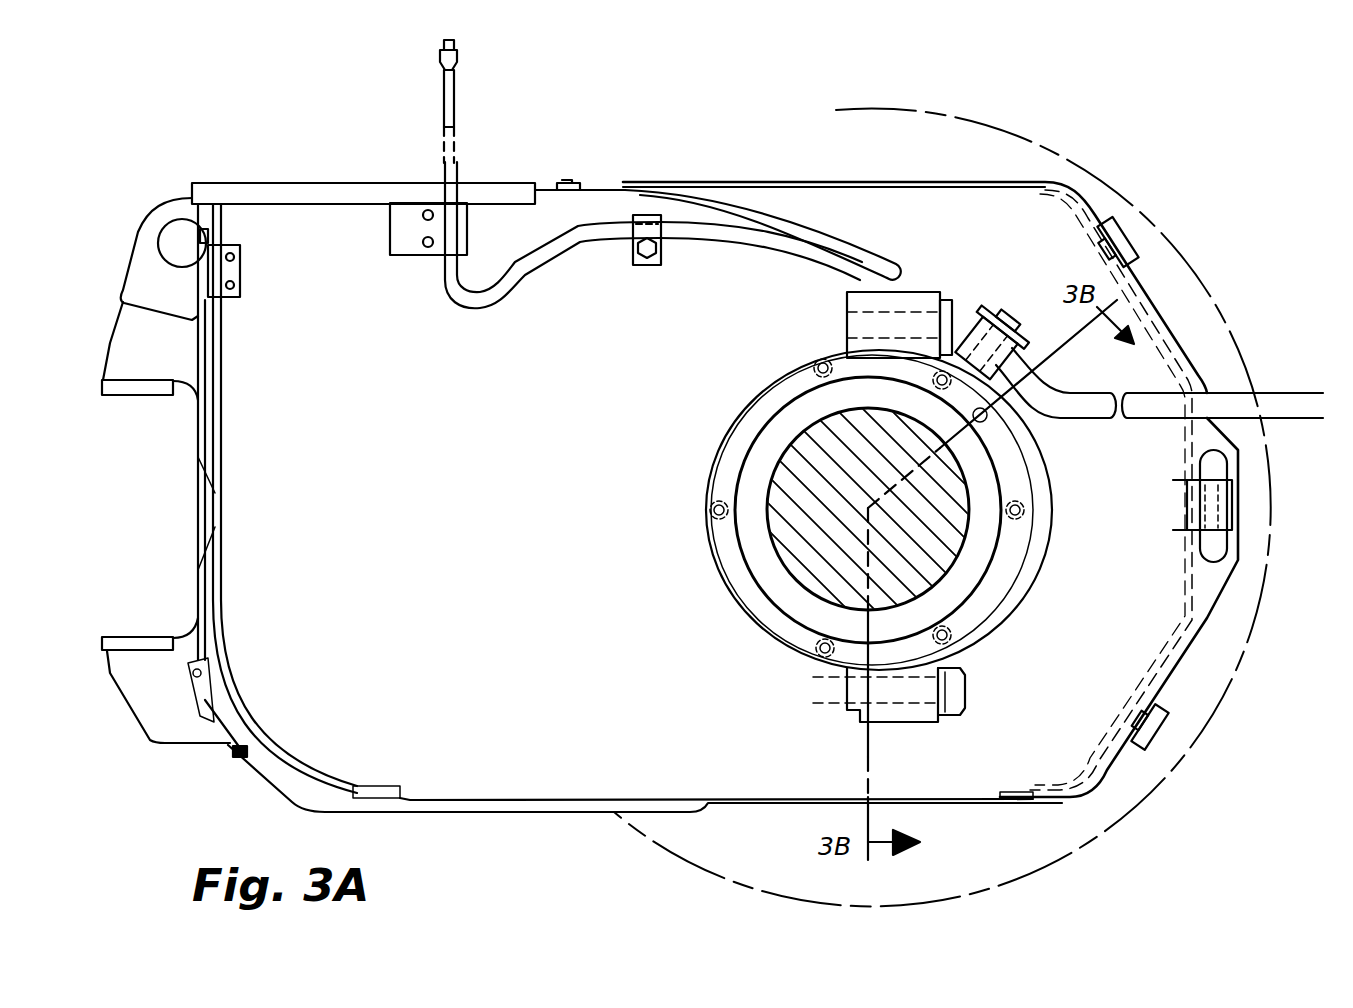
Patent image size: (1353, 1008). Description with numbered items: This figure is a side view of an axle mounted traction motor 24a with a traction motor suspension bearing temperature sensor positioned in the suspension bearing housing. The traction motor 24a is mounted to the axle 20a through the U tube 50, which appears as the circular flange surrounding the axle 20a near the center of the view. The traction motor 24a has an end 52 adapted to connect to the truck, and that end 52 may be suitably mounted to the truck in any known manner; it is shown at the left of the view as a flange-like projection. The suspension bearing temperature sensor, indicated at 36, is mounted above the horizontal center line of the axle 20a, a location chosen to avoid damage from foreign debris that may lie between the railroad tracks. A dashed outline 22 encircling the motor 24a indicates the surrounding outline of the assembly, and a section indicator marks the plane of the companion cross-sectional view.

The end 52 is at (132, 396).
The traction motor 24a is at (927, 208).
The axle 20a is at (793, 537).
The fitting 36 is at (1028, 458).
The U tube 50 is at (993, 622).
The housing outline 22 is at (1235, 675).